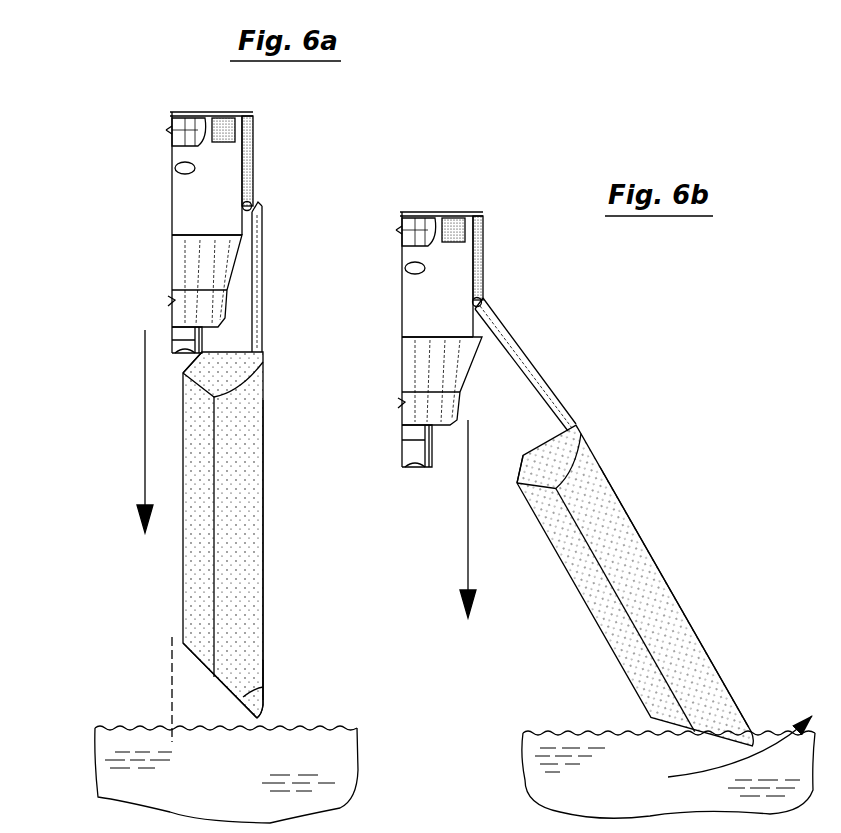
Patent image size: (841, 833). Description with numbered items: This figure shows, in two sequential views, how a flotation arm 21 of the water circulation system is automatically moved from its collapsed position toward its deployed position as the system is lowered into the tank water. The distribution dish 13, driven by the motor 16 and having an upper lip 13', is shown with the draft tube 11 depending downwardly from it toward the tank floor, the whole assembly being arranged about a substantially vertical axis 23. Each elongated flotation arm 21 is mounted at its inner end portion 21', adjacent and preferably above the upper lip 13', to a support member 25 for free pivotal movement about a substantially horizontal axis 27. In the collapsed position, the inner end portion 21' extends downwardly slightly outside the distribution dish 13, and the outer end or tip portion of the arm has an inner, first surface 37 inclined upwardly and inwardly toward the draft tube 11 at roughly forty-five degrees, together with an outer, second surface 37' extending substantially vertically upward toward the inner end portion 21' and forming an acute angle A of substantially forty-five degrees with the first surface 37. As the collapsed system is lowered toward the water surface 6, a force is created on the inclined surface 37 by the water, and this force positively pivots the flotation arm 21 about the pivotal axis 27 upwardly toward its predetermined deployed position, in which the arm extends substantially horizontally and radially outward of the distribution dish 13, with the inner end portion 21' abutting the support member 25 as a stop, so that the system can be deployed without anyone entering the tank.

In FIG. 6A, the water surface 6 is at (140, 728).
In FIG. 6B, the water surface 6 is at (606, 732).
In FIG. 6A, the draft tube 11 is at (173, 342).
In FIG. 6B, the draft tube 11 is at (416, 454).
In FIG. 6A, the distribution dish 13 is at (170, 232).
In FIG. 6B, the distribution dish 13 is at (408, 339).
In FIG. 6A, the upper lip of the distribution dish 13' is at (207, 208).
In FIG. 6B, the upper lip of the distribution dish 13' is at (437, 310).
In FIG. 6A, the motor 16 is at (200, 112).
In FIG. 6B, the motor 16 is at (420, 212).
In FIG. 6A, the flotation arm 21 is at (260, 535).
In FIG. 6B, the flotation arm 21 is at (632, 603).
In FIG. 6A, the inner end portion of the flotation arm 21' is at (297, 277).
In FIG. 6B, the inner end portion of the flotation arm 21' is at (546, 364).
In FIG. 6A, the substantially vertical axis 23 is at (170, 655).
In FIG. 6A, the support member 25 is at (256, 135).
In FIG. 6B, the support member 25 is at (486, 245).
In FIG. 6A, the horizontal pivotal axis 27 is at (250, 203).
In FIG. 6B, the horizontal pivotal axis 27 is at (482, 300).
In FIG. 6A, the inner first surface 37 is at (197, 680).
In FIG. 6A, the outer second surface 37' is at (297, 689).
In FIG. 6A, the acute angle A is at (242, 682).